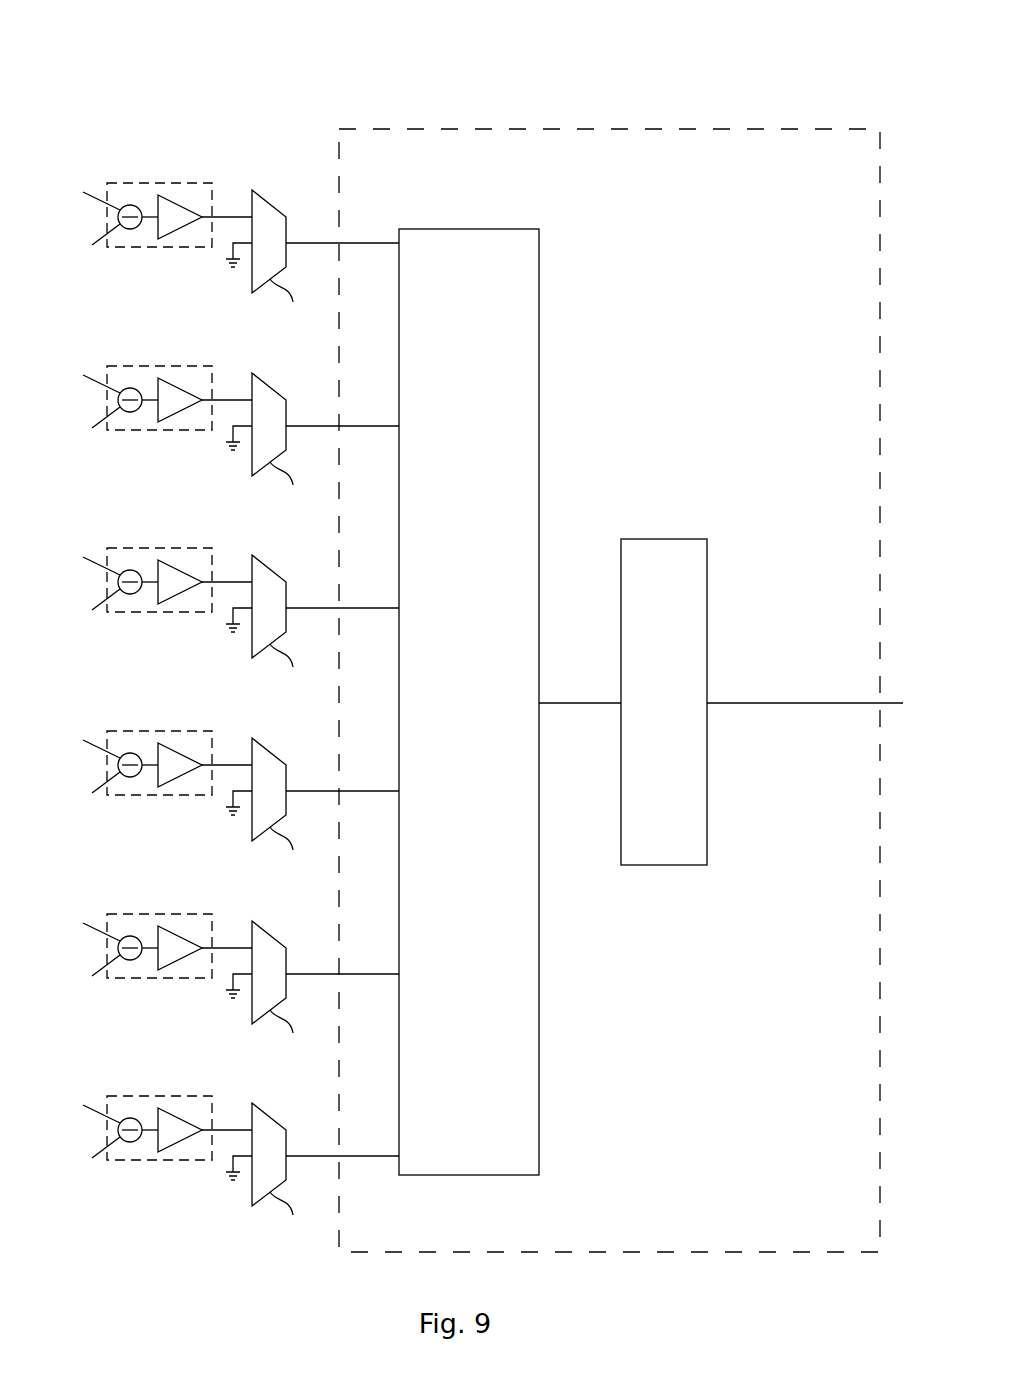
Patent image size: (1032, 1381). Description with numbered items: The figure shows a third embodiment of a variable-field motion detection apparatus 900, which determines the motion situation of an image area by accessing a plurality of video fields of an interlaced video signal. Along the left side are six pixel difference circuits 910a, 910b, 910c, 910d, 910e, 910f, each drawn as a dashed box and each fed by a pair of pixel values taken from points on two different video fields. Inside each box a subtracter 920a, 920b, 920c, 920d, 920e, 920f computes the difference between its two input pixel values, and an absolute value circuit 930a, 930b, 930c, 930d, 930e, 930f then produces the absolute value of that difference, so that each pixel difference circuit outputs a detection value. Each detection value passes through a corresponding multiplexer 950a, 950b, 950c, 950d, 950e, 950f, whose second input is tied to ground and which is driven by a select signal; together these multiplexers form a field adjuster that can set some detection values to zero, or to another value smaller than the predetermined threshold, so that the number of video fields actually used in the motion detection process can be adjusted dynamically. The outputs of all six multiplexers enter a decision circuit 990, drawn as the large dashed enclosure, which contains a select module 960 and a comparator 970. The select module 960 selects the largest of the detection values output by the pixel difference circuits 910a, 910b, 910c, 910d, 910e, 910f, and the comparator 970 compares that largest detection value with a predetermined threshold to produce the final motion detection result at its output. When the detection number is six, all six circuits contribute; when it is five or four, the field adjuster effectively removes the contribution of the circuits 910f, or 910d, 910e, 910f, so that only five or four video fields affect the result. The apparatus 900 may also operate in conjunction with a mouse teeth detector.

The variable-field motion detection apparatus 900 is at (766, 98).
The decision circuit 990 is at (590, 129).
The select module 960 is at (470, 229).
The comparator 970 is at (668, 539).
The pixel difference circuit 910a is at (142, 183).
The pixel difference circuit 910b is at (142, 366).
The pixel difference circuit 910c is at (142, 548).
The pixel difference circuit 910d is at (142, 731).
The pixel difference circuit 910e is at (142, 914).
The pixel difference circuit 910f is at (142, 1096).
The subtracter 920a is at (121, 209).
The subtracter 920b is at (121, 392).
The subtracter 920c is at (121, 574).
The subtracter 920d is at (121, 757).
The subtracter 920e is at (121, 940).
The subtracter 920f is at (121, 1122).
The absolute value circuit 930a is at (180, 206).
The absolute value circuit 930b is at (180, 389).
The absolute value circuit 930c is at (180, 571).
The absolute value circuit 930d is at (180, 754).
The absolute value circuit 930e is at (180, 937).
The absolute value circuit 930f is at (180, 1119).
The multiplexer 950a is at (267, 202).
The multiplexer 950b is at (267, 385).
The multiplexer 950c is at (267, 567).
The multiplexer 950d is at (267, 750).
The multiplexer 950e is at (267, 933).
The multiplexer 950f is at (267, 1115).